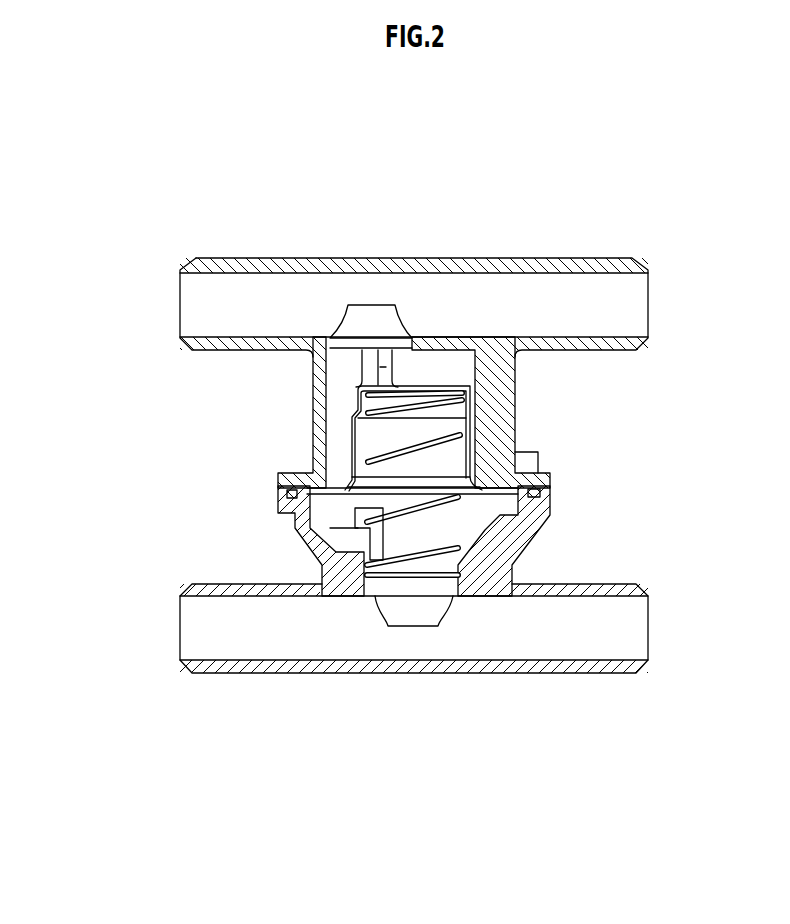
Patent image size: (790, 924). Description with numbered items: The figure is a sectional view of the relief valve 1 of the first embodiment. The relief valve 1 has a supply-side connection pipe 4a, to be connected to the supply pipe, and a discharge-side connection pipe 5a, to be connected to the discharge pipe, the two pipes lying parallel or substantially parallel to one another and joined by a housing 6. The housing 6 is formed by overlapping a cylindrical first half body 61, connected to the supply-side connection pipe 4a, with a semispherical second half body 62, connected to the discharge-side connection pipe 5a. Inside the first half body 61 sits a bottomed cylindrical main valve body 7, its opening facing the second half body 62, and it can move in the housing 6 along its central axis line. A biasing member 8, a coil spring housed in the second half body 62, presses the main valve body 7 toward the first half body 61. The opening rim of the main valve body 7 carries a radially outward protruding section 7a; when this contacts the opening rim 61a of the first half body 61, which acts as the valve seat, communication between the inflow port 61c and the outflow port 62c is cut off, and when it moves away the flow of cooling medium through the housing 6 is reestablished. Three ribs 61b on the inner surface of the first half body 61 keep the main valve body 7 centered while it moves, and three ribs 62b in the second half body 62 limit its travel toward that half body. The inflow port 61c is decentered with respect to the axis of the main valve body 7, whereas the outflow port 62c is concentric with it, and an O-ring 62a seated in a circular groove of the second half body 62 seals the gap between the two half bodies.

The relief valve 1 is at (175, 236).
The supply-side connection pipe 4a is at (296, 258).
The discharge-side connection pipe 5a is at (262, 674).
The housing 6 is at (355, 427).
The main valve body 7 is at (307, 437).
The protruding section 7a is at (530, 527).
The biasing member 8 is at (365, 500).
The first half body 61 is at (517, 383).
The opening rim 61a is at (312, 516).
The ribs 61b is at (473, 368).
The inflow port 61c is at (368, 335).
The second half body 62 is at (518, 558).
The O-ring 62a is at (542, 470).
The ribs 62b is at (432, 548).
The outflow port 62c is at (393, 597).